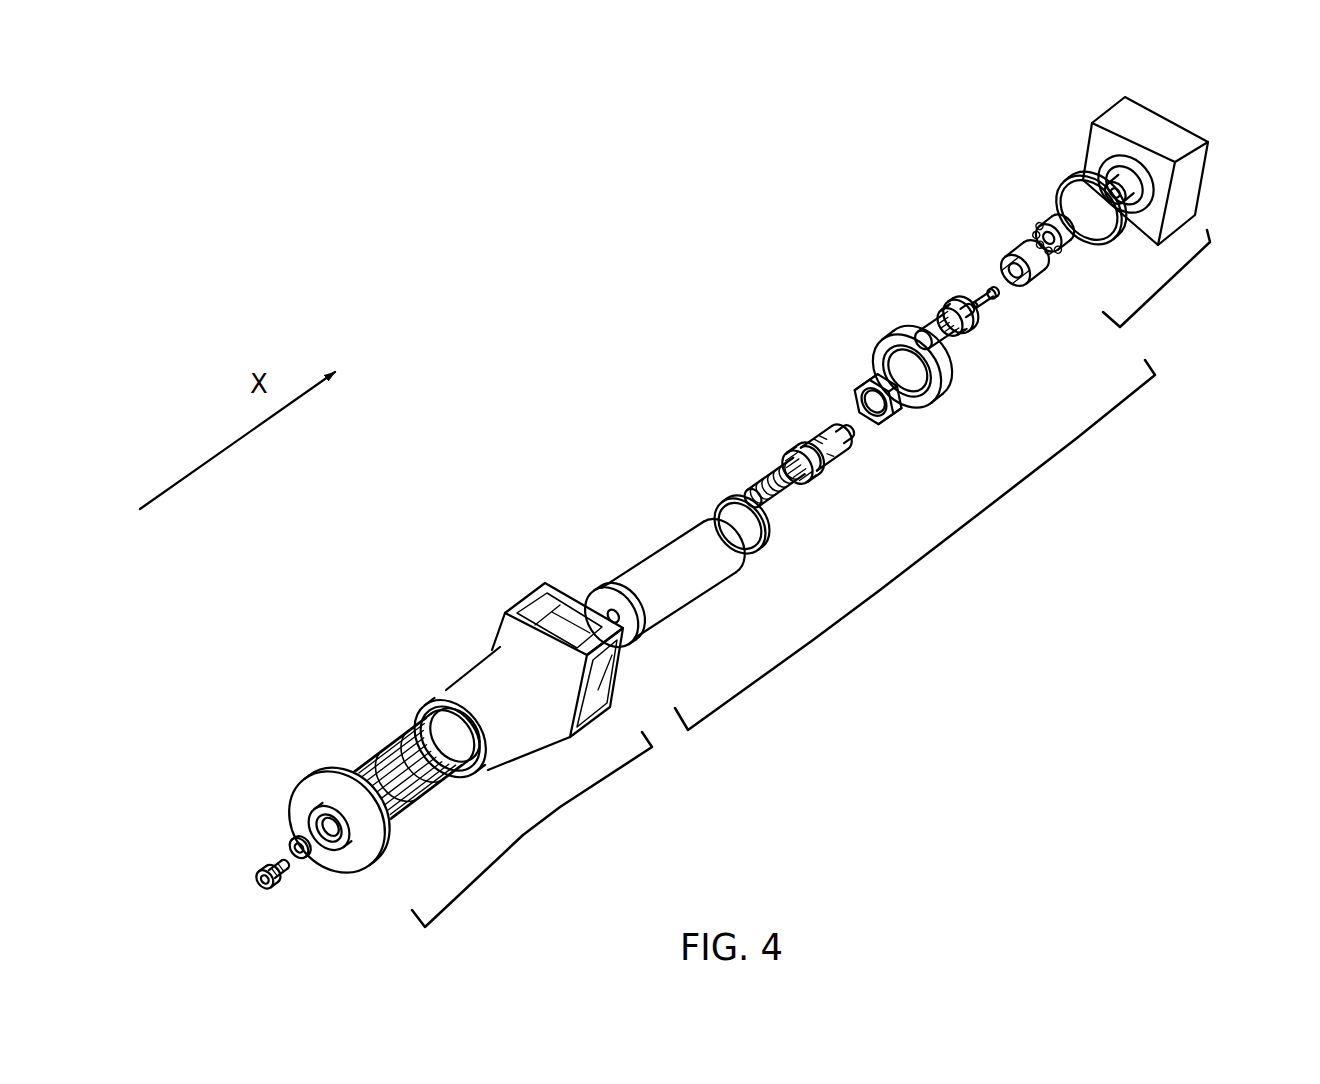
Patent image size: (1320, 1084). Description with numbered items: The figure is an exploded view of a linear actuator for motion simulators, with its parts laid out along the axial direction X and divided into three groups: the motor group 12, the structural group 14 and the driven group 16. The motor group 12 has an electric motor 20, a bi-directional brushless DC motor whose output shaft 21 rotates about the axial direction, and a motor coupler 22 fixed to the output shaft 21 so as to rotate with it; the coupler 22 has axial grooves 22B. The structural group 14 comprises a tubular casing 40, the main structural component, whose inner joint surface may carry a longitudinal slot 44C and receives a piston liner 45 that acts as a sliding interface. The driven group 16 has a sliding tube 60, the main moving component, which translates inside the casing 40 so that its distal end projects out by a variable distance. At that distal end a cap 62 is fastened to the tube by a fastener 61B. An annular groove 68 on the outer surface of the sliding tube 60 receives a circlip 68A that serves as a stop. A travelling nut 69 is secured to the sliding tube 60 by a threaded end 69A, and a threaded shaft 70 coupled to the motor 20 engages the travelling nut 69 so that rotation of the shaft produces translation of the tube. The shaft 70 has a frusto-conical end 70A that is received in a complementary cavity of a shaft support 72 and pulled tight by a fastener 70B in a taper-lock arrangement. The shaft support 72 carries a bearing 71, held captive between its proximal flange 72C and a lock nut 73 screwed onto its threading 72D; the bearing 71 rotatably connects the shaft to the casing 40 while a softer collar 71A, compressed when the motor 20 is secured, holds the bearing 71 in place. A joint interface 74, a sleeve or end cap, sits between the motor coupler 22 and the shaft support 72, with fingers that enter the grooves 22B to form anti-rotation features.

The motor group 12 is at (1168, 282).
The structural group 14 is at (527, 843).
The driven group 16 is at (933, 552).
The electric motor 20 is at (1188, 177).
The output shaft 21 is at (1120, 178).
The motor coupler 22 is at (1068, 250).
The axial grooves 22B is at (1045, 223).
The casing 40 is at (478, 642).
The longitudinal slot 44C is at (422, 713).
The piston liner 45 is at (370, 737).
The sliding tube 60 is at (645, 545).
The fastener 61B is at (266, 890).
The cap 62 is at (348, 870).
The annular groove 68 is at (737, 566).
The circlip 68A is at (760, 551).
The travelling nut 69 is at (807, 422).
The threaded end 69A is at (800, 477).
The threaded shaft 70 is at (758, 473).
The frusto-conical end 70A is at (853, 440).
The fastener 70B is at (993, 305).
The bearing 71 is at (895, 333).
The collar 71A is at (1065, 180).
The shaft support 72 is at (945, 287).
The proximal flange 72C is at (955, 297).
The threading 72D is at (963, 337).
The lock nut 73 is at (857, 387).
The joint interface 74 is at (1007, 242).